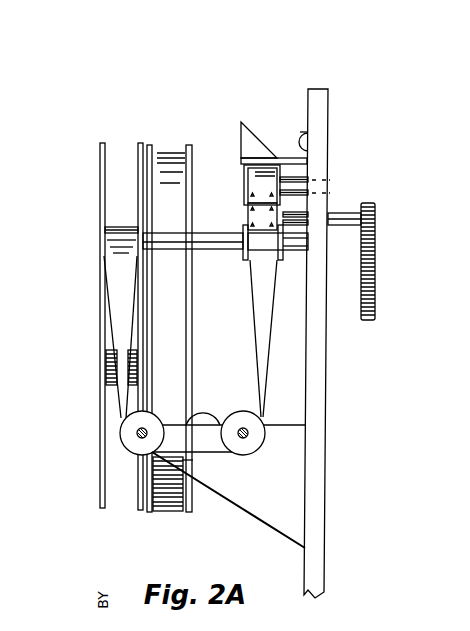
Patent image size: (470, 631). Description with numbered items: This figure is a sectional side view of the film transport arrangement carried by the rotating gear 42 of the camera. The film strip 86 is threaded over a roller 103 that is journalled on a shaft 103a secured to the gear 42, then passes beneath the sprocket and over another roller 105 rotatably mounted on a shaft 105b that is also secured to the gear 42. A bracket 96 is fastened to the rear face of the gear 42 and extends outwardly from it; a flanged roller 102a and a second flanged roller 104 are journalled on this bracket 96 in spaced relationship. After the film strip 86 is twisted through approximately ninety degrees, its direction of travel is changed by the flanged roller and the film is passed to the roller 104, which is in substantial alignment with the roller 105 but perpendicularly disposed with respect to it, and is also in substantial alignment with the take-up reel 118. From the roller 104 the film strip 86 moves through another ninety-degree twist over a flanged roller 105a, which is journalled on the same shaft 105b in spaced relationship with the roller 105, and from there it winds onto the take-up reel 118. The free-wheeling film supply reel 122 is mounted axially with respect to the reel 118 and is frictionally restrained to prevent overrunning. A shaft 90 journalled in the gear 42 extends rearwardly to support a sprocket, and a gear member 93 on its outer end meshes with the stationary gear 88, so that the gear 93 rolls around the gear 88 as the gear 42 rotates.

The gear 42 is at (317, 102).
The film strip 86 is at (262, 177).
The stationary gear member 88 is at (376, 291).
The shaft 90 is at (345, 213).
The gear member 93 is at (376, 222).
The bracket 96 is at (268, 510).
The flanged roller 102a is at (253, 432).
The roller 103 is at (285, 174).
The shaft 103a is at (288, 193).
The flanged roller 104 is at (127, 443).
The roller 105 is at (287, 258).
The flanged roller 105a is at (106, 249).
The shaft 105b is at (218, 249).
The film take-up reel 118 is at (105, 176).
The film supply reel 122 is at (189, 144).